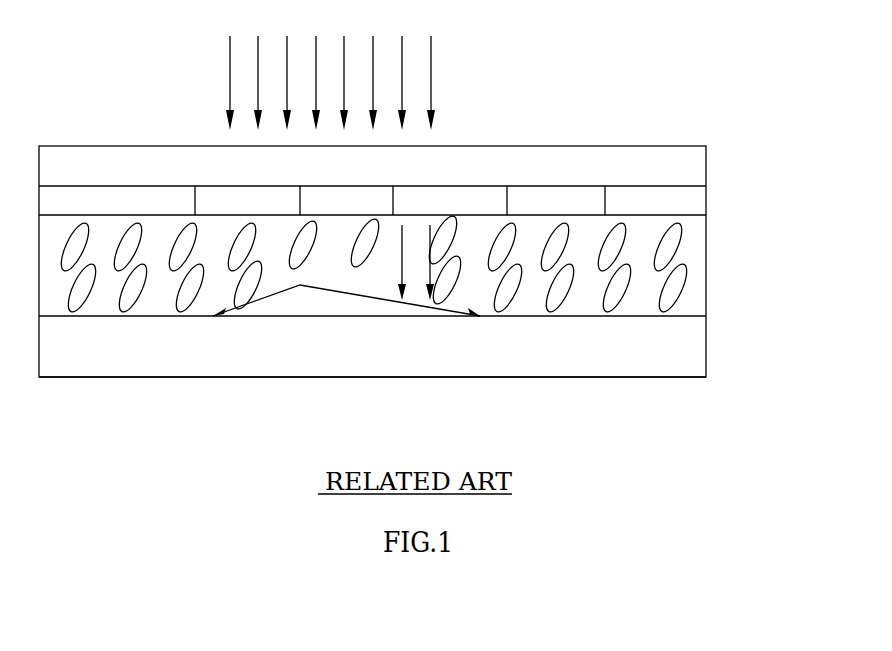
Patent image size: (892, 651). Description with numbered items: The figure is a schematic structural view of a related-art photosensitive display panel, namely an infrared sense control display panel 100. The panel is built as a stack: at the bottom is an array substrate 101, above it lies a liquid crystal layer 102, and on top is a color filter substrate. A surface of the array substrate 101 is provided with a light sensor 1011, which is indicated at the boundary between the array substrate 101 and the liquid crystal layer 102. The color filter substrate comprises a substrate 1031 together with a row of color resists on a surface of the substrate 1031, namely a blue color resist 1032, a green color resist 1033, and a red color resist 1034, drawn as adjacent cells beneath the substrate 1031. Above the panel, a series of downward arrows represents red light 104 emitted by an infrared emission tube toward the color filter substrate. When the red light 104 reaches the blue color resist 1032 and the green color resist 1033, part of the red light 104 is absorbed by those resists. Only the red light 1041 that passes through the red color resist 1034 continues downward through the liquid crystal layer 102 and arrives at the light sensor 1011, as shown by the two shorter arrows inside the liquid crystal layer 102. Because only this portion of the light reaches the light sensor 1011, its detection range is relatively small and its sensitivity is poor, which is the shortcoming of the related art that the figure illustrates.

The infrared sense control display panel 100 is at (92, 113).
The array substrate 101 is at (667, 343).
The light sensor 1011 is at (280, 305).
The liquid crystal layer 102 is at (667, 250).
The substrate 1031 is at (668, 170).
The blue color resist 1032 is at (234, 202).
The green color resist 1033 is at (348, 195).
The red color resist 1034 is at (455, 205).
The red light 104 is at (431, 67).
The red light passing through the red color resist 1041 is at (400, 250).